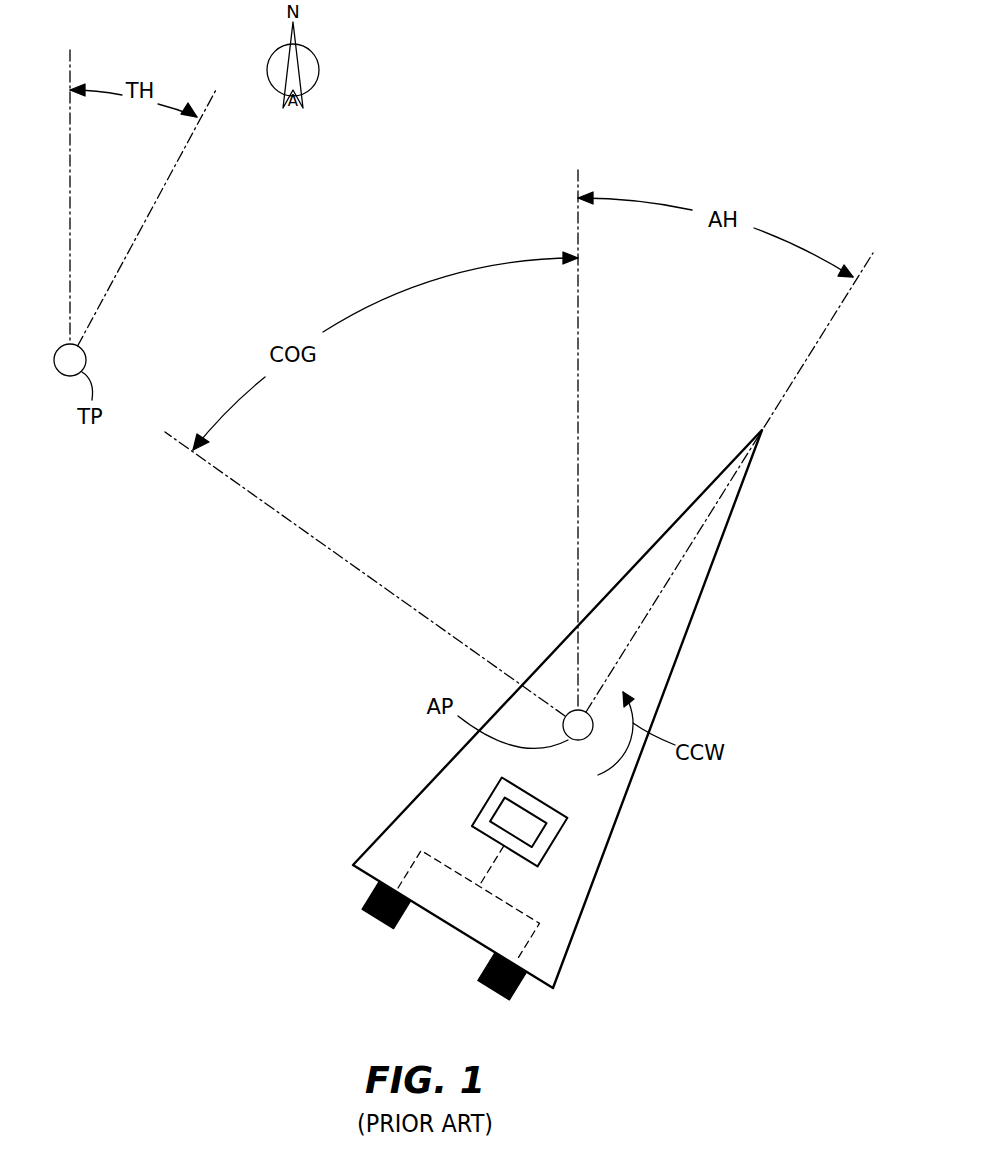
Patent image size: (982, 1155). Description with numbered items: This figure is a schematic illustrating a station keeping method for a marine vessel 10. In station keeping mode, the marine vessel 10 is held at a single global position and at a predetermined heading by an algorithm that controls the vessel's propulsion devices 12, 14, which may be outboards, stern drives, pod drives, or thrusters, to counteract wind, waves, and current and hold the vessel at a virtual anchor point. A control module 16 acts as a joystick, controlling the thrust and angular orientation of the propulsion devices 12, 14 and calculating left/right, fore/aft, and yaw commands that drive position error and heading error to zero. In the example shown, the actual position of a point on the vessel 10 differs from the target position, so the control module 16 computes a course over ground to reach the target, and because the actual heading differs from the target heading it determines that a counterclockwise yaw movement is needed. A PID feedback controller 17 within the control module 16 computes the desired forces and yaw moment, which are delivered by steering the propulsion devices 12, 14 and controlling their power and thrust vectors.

The marine vessel 10 is at (682, 647).
The propulsion device 12 is at (363, 903).
The propulsion device 14 is at (480, 975).
The control module 16 is at (547, 853).
The feedback controller 17 is at (498, 812).